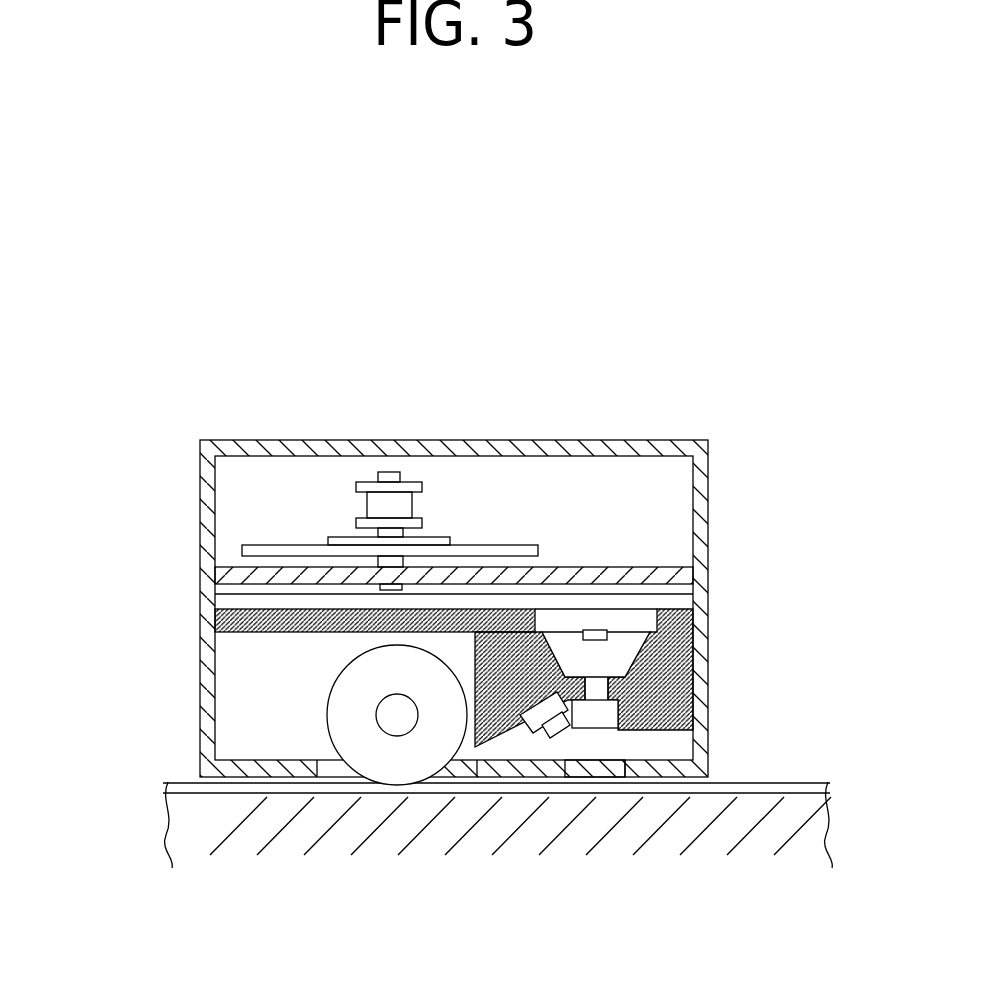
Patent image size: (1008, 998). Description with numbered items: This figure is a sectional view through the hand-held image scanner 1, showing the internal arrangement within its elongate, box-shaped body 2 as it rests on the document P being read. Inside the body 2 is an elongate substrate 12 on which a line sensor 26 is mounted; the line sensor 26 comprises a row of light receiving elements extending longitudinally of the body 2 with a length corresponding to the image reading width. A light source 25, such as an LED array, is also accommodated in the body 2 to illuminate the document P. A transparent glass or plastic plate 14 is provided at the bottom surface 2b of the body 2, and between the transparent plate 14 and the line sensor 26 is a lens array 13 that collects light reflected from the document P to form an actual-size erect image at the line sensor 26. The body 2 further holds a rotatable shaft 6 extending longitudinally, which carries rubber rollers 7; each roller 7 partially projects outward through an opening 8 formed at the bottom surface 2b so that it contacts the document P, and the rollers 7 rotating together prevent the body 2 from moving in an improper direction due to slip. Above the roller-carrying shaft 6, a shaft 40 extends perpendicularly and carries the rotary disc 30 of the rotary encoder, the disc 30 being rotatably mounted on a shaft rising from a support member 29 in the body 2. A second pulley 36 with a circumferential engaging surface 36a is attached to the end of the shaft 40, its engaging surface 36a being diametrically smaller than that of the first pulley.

The hand-held image scanner 1 is at (742, 442).
The body 2 is at (200, 485).
The bottom surface 2b is at (560, 766).
The shaft 6 is at (383, 733).
The rollers 7 is at (400, 770).
The opening 8 is at (457, 772).
The substrate 12 is at (650, 594).
The lens array 13 is at (603, 713).
The transparent plate 14 is at (618, 762).
The light source 25 is at (520, 887).
The line sensor 26 is at (642, 622).
The support member 29 is at (272, 583).
The rotary disc 30 is at (270, 545).
The second pulley 36 is at (357, 484).
The circumferential engaging surface 36a is at (413, 502).
The shaft 40 is at (390, 472).
The document P is at (178, 783).